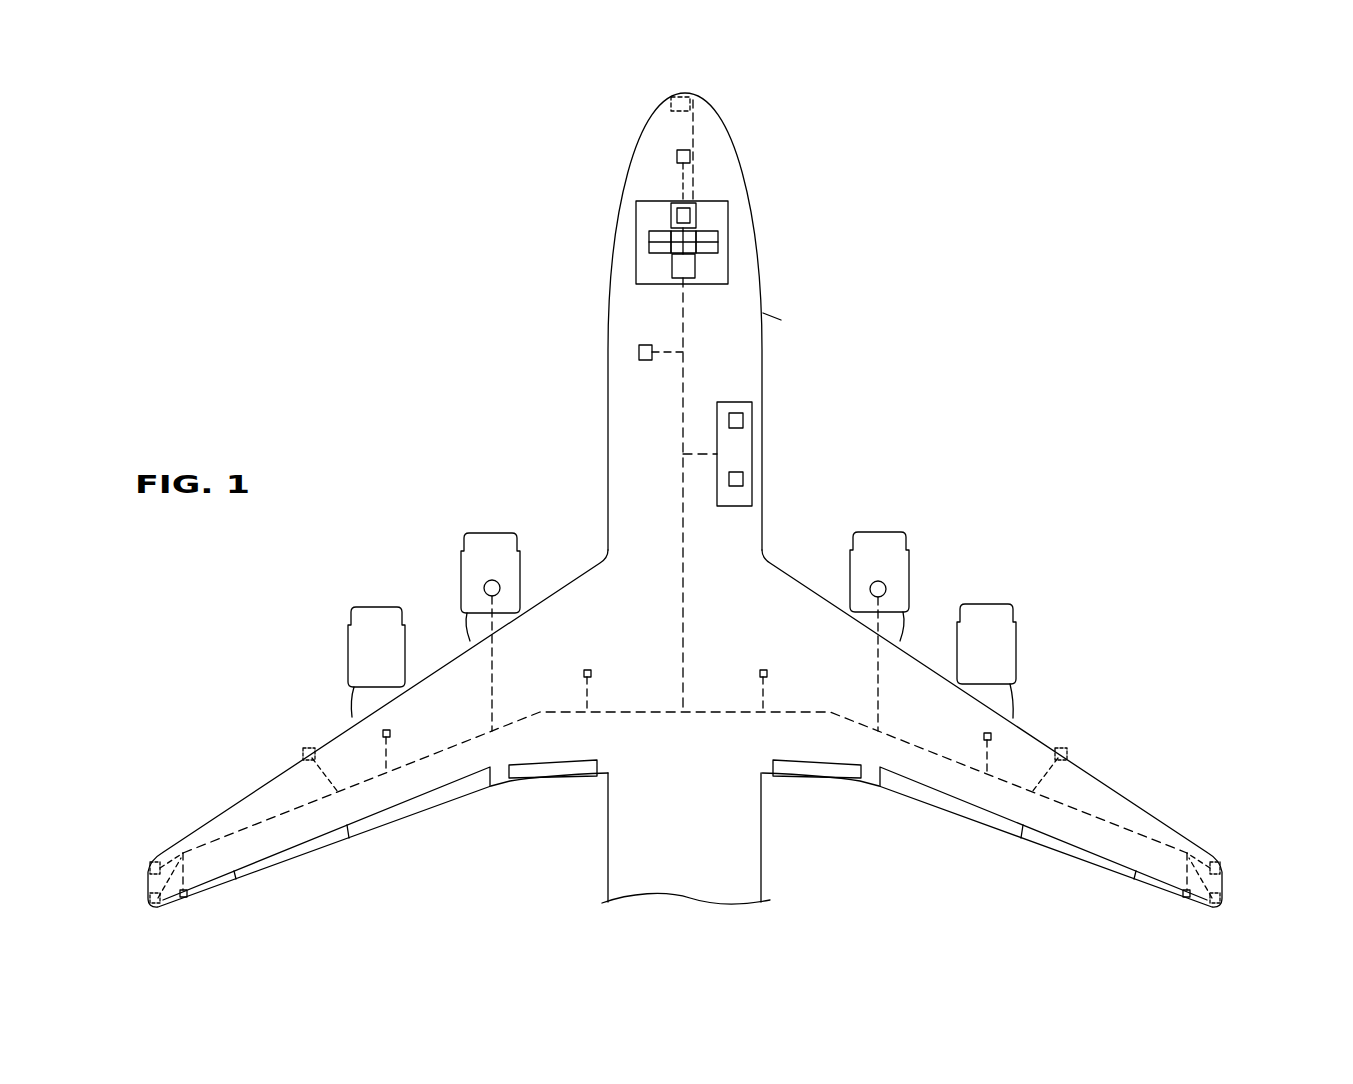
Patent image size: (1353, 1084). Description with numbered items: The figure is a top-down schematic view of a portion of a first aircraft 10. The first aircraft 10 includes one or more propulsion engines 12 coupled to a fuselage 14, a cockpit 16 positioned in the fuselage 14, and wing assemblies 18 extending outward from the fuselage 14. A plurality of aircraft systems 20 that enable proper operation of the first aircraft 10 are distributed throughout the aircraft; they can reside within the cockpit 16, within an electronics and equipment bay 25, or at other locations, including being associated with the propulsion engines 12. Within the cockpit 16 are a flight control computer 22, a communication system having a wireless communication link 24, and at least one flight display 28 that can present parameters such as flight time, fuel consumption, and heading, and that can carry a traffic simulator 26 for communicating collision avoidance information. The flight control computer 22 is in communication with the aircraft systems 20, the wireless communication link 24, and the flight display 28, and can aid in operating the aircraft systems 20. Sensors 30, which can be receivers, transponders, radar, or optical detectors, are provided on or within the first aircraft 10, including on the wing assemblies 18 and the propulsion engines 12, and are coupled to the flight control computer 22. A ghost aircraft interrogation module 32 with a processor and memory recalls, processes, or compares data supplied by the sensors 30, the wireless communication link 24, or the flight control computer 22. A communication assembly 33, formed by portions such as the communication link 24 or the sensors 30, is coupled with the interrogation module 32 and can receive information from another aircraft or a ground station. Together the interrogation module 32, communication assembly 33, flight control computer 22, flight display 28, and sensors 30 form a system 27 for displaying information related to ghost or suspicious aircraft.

The first aircraft 10 is at (508, 127).
The propulsion engines 12 is at (375, 615).
The fuselage 14 is at (789, 317).
The cockpit 16 is at (710, 150).
The wing assemblies 18 is at (188, 803).
The aircraft systems 20 is at (677, 155).
The flight control computer 22 is at (710, 245).
The wireless communication link 24 is at (655, 240).
The electronics and equipment bay 25 is at (752, 440).
The traffic simulator 26 is at (678, 212).
The system 27 is at (778, 244).
The flight display 28 is at (697, 216).
The sensors 30 is at (690, 95).
The ghost aircraft interrogation module 32 is at (668, 268).
The communication assembly 33 is at (540, 321).